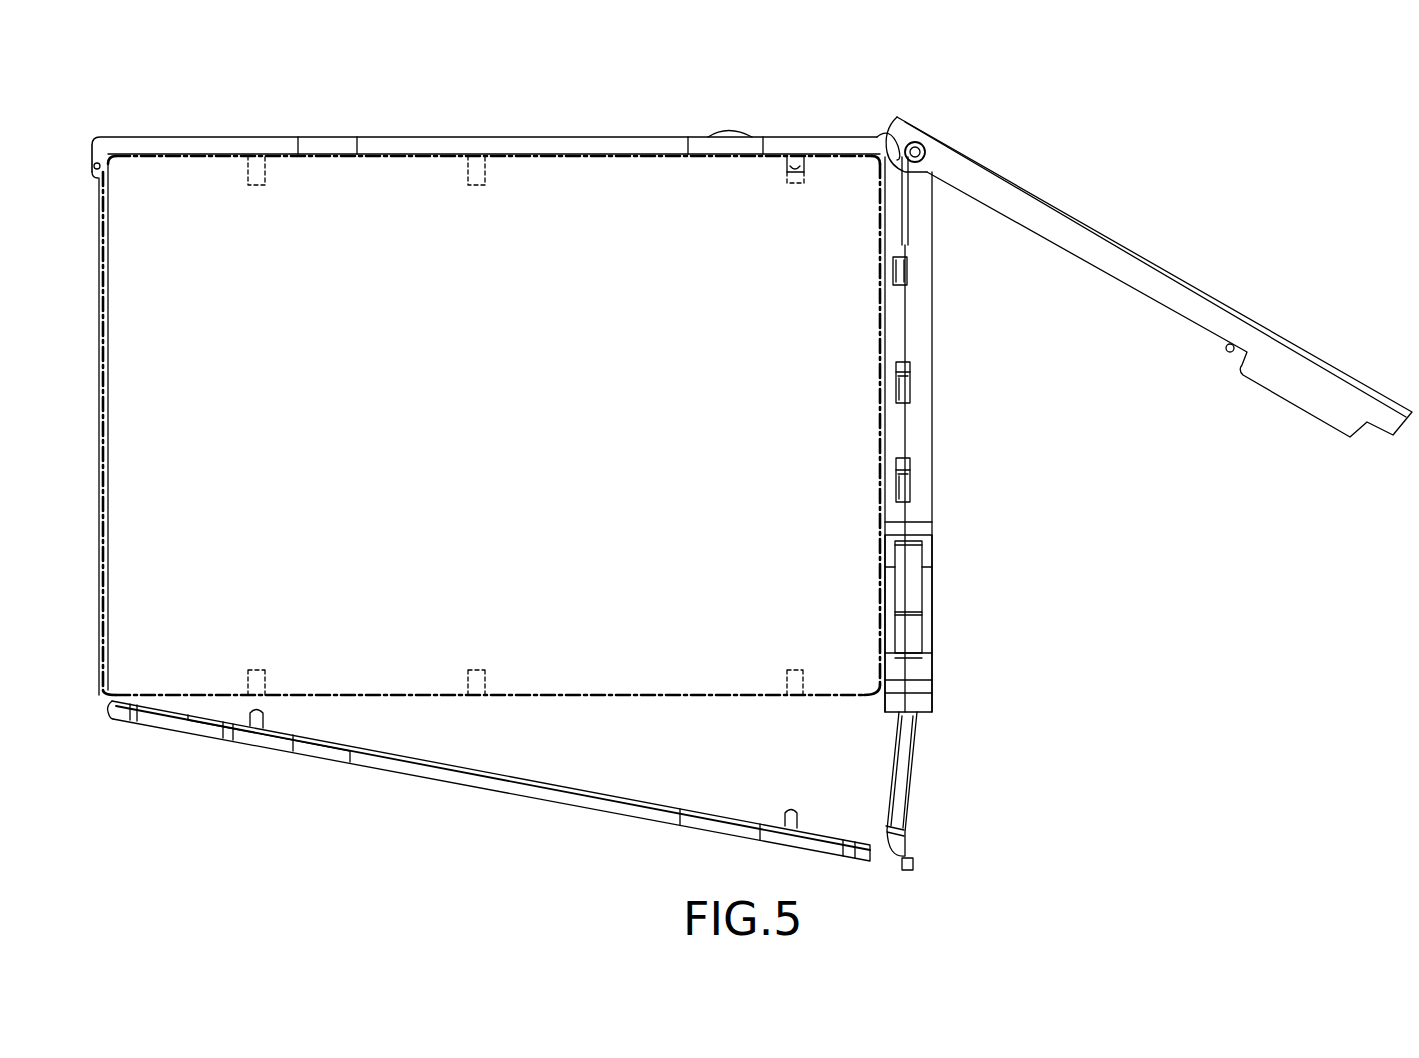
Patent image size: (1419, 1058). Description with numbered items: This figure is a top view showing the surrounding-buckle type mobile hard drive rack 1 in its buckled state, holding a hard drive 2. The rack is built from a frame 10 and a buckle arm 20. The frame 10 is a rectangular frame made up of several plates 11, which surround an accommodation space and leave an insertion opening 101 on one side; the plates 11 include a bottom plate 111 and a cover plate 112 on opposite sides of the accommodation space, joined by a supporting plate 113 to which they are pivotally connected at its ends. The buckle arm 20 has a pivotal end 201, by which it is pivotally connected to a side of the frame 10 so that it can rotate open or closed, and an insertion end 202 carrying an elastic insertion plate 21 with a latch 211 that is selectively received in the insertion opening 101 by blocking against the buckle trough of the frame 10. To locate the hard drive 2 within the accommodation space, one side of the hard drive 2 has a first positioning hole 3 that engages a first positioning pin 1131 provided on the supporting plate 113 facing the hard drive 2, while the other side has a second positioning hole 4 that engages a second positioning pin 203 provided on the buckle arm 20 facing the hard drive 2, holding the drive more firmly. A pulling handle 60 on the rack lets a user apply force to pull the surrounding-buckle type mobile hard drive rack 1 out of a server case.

The surrounding-buckle type mobile hard drive rack 1 is at (857, 110).
The frame 10 is at (612, 130).
The plates 11 is at (275, 136).
The bottom plate 111 is at (105, 367).
The cover plate 112 is at (905, 322).
The supporting plate 113 is at (413, 148).
The first positioning pin 1131 is at (785, 162).
The hard drive 2 is at (625, 690).
The first positioning hole 3 is at (797, 184).
The second positioning hole 4 is at (795, 670).
The pulling handle 60 is at (1185, 295).
The buckle arm 20 is at (575, 812).
The pivotal end 201 is at (120, 725).
The insertion end 202 is at (905, 870).
The second positioning pin 203 is at (790, 806).
The elastic insertion plate 21 is at (905, 770).
The latch 211 is at (915, 838).
The insertion opening 101 is at (498, 725).